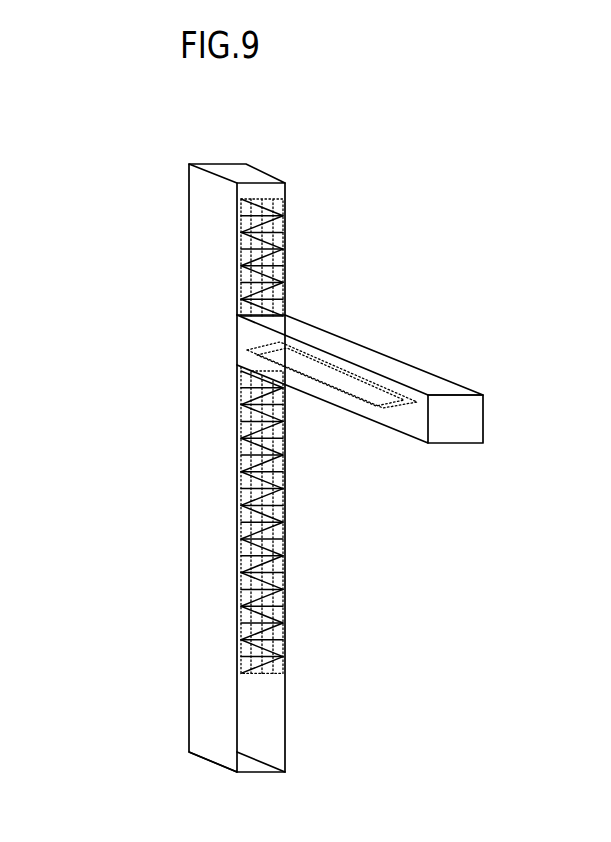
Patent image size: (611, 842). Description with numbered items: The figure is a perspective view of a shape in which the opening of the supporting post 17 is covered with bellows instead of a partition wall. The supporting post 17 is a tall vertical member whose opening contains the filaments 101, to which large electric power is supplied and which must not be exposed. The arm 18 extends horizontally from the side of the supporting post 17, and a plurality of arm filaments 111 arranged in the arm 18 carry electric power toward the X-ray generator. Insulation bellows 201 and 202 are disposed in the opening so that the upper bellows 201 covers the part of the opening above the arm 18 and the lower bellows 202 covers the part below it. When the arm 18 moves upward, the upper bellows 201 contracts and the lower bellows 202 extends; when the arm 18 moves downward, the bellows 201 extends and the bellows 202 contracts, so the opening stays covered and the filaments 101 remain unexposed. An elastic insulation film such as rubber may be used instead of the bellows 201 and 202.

The supporting post 17 is at (189, 248).
The arm 18 is at (423, 372).
The filaments 101 is at (243, 668).
The arm filaments 111 is at (312, 357).
The upper insulation bellows 201 is at (283, 272).
The lower insulation bellows 202 is at (282, 563).